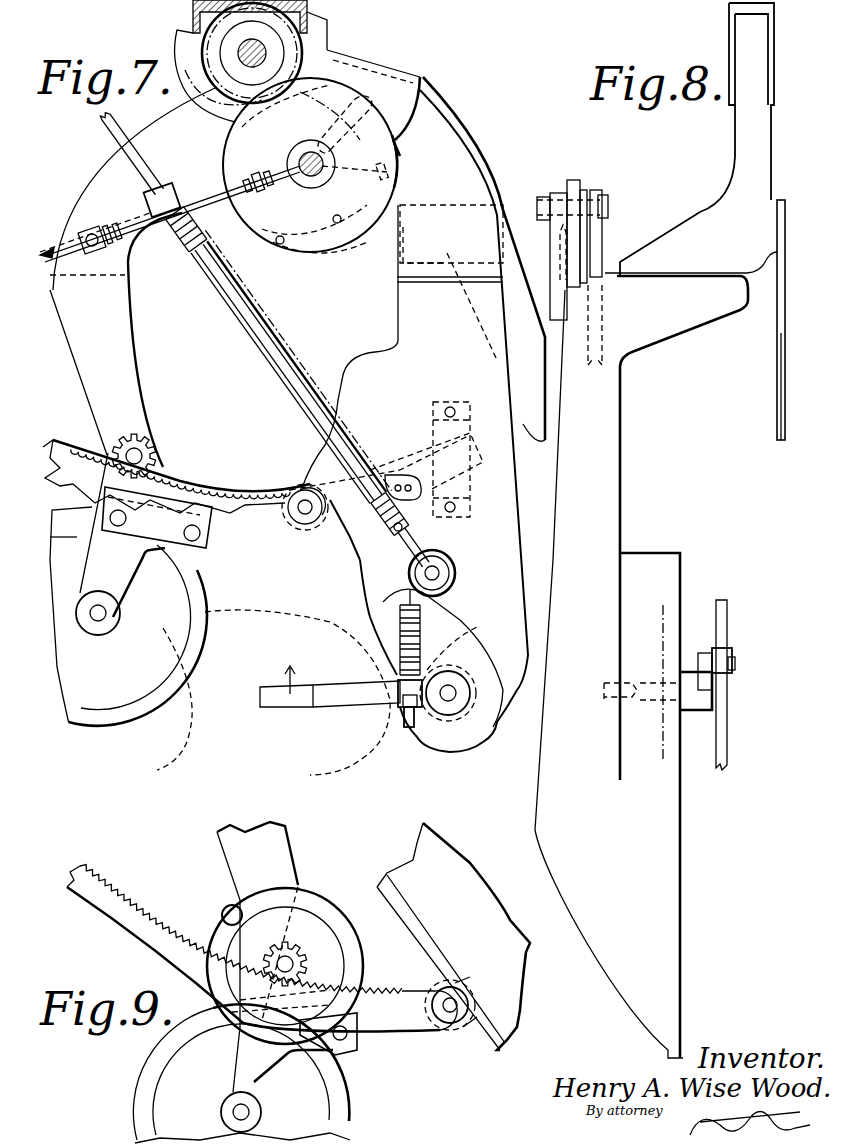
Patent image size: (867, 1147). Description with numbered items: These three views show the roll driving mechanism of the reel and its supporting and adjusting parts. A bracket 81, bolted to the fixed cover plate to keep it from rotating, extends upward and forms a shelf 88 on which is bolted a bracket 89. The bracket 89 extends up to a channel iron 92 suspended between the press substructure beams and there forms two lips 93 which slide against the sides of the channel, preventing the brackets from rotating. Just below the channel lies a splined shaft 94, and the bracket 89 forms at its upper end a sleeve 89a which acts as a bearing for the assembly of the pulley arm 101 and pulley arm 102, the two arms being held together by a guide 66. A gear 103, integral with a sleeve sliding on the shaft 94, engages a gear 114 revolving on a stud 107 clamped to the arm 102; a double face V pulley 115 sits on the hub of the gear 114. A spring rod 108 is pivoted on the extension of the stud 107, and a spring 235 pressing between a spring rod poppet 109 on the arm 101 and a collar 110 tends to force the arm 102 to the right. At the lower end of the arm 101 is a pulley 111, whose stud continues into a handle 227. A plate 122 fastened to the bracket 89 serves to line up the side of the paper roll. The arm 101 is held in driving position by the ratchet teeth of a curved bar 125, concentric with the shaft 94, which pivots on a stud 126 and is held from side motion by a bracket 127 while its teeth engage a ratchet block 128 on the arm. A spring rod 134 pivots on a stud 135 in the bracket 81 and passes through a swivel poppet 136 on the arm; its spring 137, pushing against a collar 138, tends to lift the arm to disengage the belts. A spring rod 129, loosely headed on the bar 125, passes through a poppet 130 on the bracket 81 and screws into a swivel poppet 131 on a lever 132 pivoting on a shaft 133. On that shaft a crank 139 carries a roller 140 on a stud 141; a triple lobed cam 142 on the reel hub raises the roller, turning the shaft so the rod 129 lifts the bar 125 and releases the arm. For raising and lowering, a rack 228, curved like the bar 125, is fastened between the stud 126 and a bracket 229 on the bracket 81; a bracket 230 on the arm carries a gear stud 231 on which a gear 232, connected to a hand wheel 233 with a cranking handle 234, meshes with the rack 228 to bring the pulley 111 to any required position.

In FIG. 7, the guide 66 is at (318, 230).
In FIG. 7, the bracket 81 is at (403, 348).
In FIG. 8, the bracket 81 is at (616, 477).
In FIG. 9, the bracket 81 is at (521, 962).
In FIG. 8, the shelf 88 is at (690, 280).
In FIG. 7, the bracket 89 is at (478, 152).
In FIG. 8, the bracket 89 is at (753, 164).
In FIG. 8, the sleeve 89a is at (730, 36).
In FIG. 7, the channel iron 92 is at (309, 12).
In FIG. 7, the lips 93 is at (190, 28).
In FIG. 7, the splined shaft 94 is at (240, 52).
In FIG. 7, the pulley arm 101 is at (133, 385).
In FIG. 9, the pulley arm 101 is at (313, 845).
In FIG. 7, the pulley arm 102 is at (362, 86).
In FIG. 7, the gear 103 is at (214, 116).
In FIG. 7, the stud 107 is at (320, 170).
In FIG. 7, the spring rod 108 is at (47, 252).
In FIG. 7, the spring rod poppet 109 is at (92, 228).
In FIG. 7, the collar 110 is at (292, 172).
In FIG. 7, the pulley 111 is at (207, 633).
In FIG. 9, the pulley 111 is at (350, 1113).
In FIG. 7, the gear 114 is at (304, 108).
In FIG. 7, the double face V pulley 115 is at (398, 148).
In FIG. 7, the plate 122 is at (541, 446).
In FIG. 8, the plate 122 is at (778, 419).
In FIG. 7, the curved bar 125 is at (252, 494).
In FIG. 8, the curved bar 125 is at (602, 244).
In FIG. 8, the stud 126 is at (607, 206).
In FIG. 7, the bracket 127 is at (435, 428).
In FIG. 7, the ratchet block 128 is at (212, 548).
In FIG. 7, the spring rod 129 is at (417, 720).
In FIG. 7, the poppet 130 is at (432, 608).
In FIG. 7, the swivel poppet 131 is at (400, 708).
In FIG. 7, the lever 132 is at (348, 705).
In FIG. 7, the shaft 133 is at (456, 702).
In FIG. 8, the shaft 133 is at (611, 705).
In FIG. 7, the spring rod 134 is at (120, 140).
In FIG. 7, the stud 135 is at (456, 574).
In FIG. 7, the swivel poppet 136 is at (165, 186).
In FIG. 7, the spring 137 is at (180, 252).
In FIG. 7, the collar 138 is at (412, 528).
In FIG. 7, the crank 139 is at (425, 680).
In FIG. 8, the crank 139 is at (718, 680).
In FIG. 7, the roller 140 is at (447, 643).
In FIG. 8, the roller 140 is at (722, 658).
In FIG. 8, the stud 141 is at (738, 662).
In FIG. 7, the triple lobed cam 142 is at (300, 607).
In FIG. 8, the triple lobed cam 142 is at (730, 758).
In FIG. 7, the handle 227 is at (104, 622).
In FIG. 9, the handle 227 is at (249, 1113).
In FIG. 7, the rack 228 is at (75, 447).
In FIG. 8, the rack 228 is at (553, 266).
In FIG. 9, the rack 228 is at (150, 913).
In FIG. 7, the bracket 229 is at (314, 526).
In FIG. 9, the bracket 229 is at (472, 1023).
In FIG. 9, the bracket 230 is at (355, 1050).
In FIG. 9, the gear stud 231 is at (300, 957).
In FIG. 7, the gear 232 is at (160, 453).
In FIG. 9, the gear 232 is at (322, 969).
In FIG. 9, the hand wheel 233 is at (322, 897).
In FIG. 9, the cranking handle 234 is at (222, 915).
In FIG. 7, the spring 235 is at (200, 192).